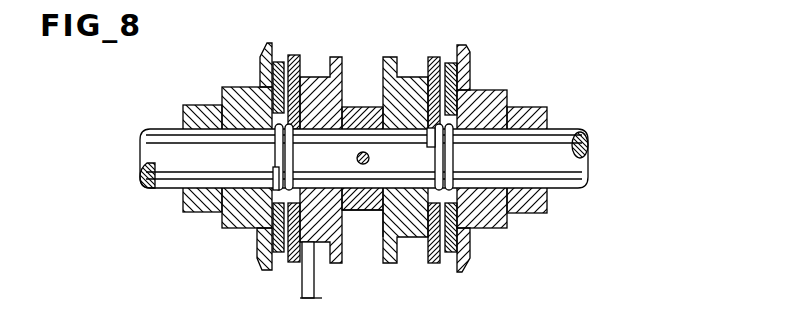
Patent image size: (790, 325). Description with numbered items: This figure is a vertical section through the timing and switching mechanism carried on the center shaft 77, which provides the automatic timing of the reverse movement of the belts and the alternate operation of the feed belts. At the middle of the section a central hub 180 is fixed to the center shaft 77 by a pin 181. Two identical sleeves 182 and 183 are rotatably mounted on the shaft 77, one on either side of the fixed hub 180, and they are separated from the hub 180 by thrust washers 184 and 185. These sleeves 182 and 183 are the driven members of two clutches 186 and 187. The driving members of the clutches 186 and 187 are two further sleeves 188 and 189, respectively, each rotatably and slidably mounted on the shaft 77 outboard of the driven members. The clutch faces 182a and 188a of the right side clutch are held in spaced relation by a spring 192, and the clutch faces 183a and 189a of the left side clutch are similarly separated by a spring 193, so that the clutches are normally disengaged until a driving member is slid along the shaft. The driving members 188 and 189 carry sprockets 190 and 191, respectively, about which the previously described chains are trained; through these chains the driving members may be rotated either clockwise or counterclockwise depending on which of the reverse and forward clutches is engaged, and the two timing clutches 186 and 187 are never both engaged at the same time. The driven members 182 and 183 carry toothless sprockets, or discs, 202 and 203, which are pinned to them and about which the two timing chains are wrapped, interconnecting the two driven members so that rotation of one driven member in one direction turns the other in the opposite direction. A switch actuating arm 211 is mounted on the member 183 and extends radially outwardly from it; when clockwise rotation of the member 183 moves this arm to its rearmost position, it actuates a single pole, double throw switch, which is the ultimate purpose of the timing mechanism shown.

The center shaft 77 is at (585, 135).
The central hub 180 is at (362, 107).
The pin 181 is at (356, 158).
The sleeve 182 is at (437, 264).
The clutch face 182a is at (428, 257).
The sleeve 183 is at (313, 78).
The clutch face 183a is at (295, 262).
The thrust washer 184 is at (384, 212).
The thrust washer 185 is at (341, 212).
The clutch 186 is at (448, 58).
The clutch 187 is at (284, 62).
The sleeve 188 is at (492, 93).
The clutch face 188a is at (452, 253).
The sleeve 189 is at (252, 92).
The clutch face 189a is at (276, 243).
The sprocket 190 is at (468, 52).
The sprocket 191 is at (261, 60).
The spring 192 is at (455, 151).
The spring 193 is at (273, 167).
The toothless sprocket 202 is at (392, 57).
The toothless sprocket 203 is at (340, 60).
The switch actuating arm 211 is at (314, 298).